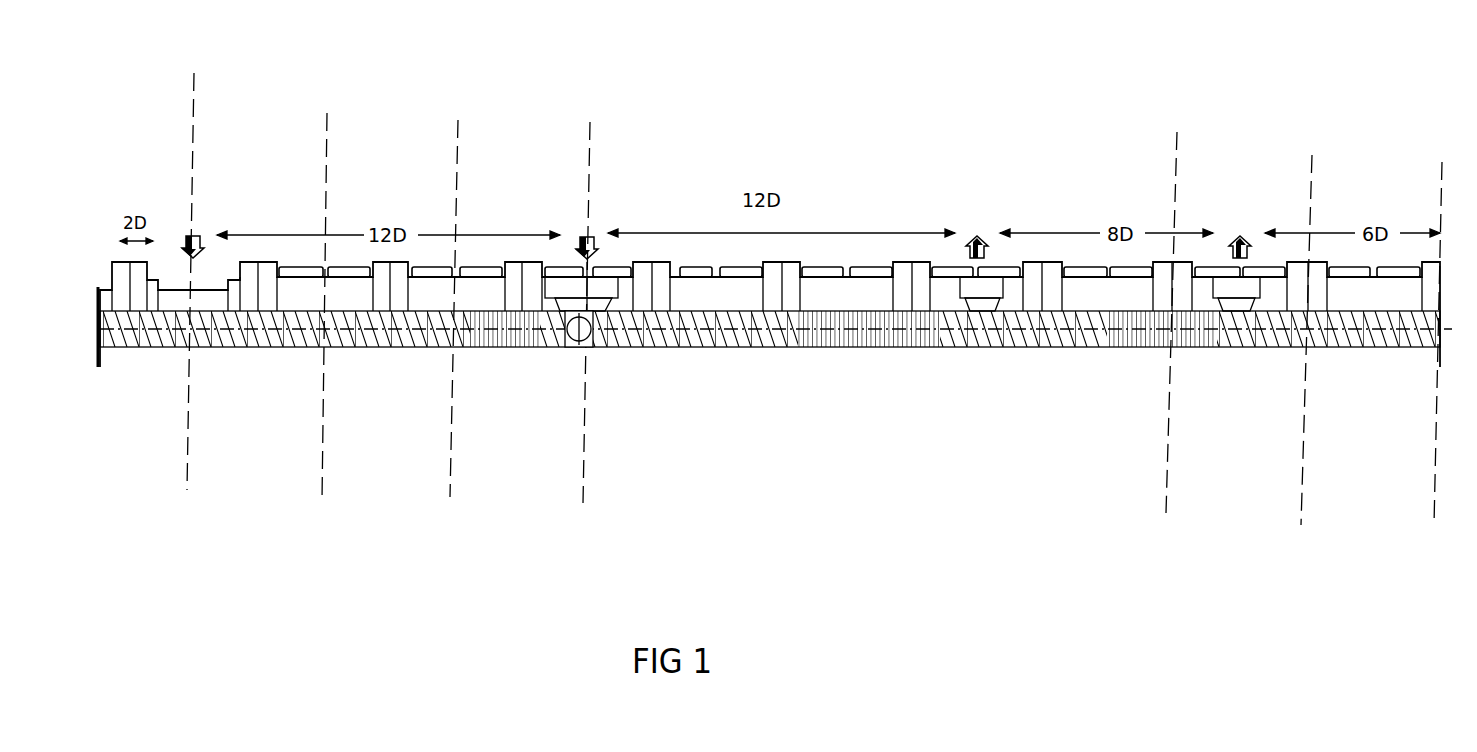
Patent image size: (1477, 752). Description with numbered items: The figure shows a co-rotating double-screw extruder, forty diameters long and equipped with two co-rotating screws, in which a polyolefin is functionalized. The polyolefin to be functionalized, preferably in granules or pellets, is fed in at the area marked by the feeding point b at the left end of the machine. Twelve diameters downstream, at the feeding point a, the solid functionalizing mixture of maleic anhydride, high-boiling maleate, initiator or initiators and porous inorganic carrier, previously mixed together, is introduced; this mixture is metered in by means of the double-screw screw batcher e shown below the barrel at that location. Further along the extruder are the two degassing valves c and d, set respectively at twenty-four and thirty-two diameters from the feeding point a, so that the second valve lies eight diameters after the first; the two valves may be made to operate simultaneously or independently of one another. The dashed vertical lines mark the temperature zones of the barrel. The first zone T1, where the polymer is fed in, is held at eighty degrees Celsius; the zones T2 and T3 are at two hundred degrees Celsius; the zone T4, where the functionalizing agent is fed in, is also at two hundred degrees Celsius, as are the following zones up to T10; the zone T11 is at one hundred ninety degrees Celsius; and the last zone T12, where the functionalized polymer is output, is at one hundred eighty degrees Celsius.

The feeding point of the functionalising mixture a is at (585, 208).
The feeding point of the polyolefin to be functionalised b is at (199, 207).
The degassing valve c is at (977, 210).
The degassing valve d is at (1234, 227).
The double-screw screw batcher e is at (600, 333).
The temperature zone T1 is at (183, 297).
The temperature zone T2 is at (316, 322).
The temperature zone T3 is at (443, 322).
The temperature zone T4 is at (576, 327).
The temperature zone T10 is at (1165, 340).
The temperature zone T11 is at (1300, 352).
The temperature zone T12 is at (1434, 355).